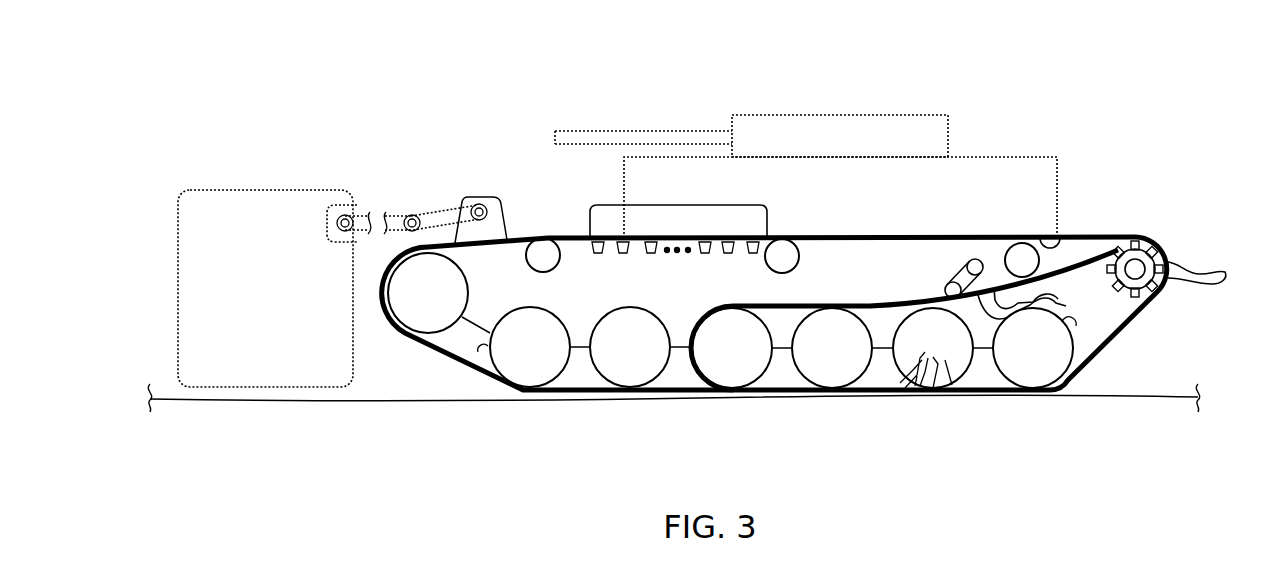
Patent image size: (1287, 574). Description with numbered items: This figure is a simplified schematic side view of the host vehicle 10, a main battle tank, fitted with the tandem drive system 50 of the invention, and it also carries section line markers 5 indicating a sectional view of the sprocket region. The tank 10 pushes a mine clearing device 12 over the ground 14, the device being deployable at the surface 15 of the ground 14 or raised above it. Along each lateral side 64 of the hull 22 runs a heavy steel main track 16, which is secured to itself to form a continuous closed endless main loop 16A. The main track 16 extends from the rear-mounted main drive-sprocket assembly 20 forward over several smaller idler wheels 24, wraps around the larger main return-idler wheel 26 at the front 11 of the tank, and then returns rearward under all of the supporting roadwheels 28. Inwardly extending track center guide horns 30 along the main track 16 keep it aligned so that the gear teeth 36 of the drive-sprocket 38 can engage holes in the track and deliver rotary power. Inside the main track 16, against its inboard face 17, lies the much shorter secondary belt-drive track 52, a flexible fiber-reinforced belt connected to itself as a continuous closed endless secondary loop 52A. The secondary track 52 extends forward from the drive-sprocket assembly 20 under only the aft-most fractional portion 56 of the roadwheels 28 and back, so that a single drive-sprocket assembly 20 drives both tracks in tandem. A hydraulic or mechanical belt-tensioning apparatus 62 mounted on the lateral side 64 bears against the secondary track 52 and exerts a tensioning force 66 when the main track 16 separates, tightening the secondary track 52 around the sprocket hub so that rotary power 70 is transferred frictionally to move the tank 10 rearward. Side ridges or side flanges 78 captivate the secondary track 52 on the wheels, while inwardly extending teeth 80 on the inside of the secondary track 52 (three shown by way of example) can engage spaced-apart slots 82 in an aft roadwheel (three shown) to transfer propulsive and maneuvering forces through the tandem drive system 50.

The host vehicle 10 is at (1023, 115).
The mine clearing device 12 is at (258, 184).
The ground 14 is at (382, 436).
The surface of ground 15 is at (382, 398).
The main drive-sprocket assembly 20 is at (1155, 205).
The secondary belt-drive track 52 is at (886, 306).
The main return-idler wheel 26 is at (428, 291).
The hull 22 is at (642, 294).
The front of tank 11 is at (556, 307).
The lateral side of tank 64 is at (690, 294).
The roadwheels 28 is at (853, 362).
The aft-most fractional portion of roadwheels 56 is at (1040, 403).
The slots 82 is at (926, 352).
The idler wheels 24 is at (560, 266).
The side ridges/side flanges 78 is at (527, 238).
The track center guide horns 30 is at (673, 205).
The main track 16 is at (805, 238).
The continuous closed endless main loop 16A is at (947, 237).
The inboard face of main track 17 is at (1037, 236).
The tandem drive system 50 is at (787, 303).
The belt-tensioning apparatus 62 is at (957, 265).
The tensioning force 66 is at (940, 285).
The continuous closed endless secondary loop 52A is at (994, 280).
The inwardly extending teeth 80 is at (1037, 307).
The drive-sprocket 38 is at (1118, 274).
The gear teeth 36 is at (1215, 272).
The rotary power 70 is at (1137, 221).
The section line 5 is at (1062, 228).